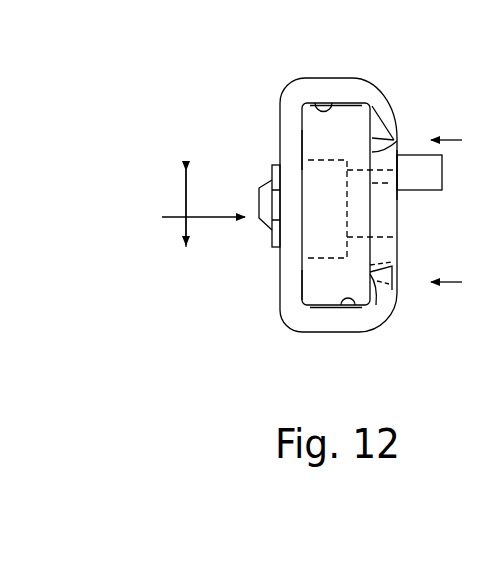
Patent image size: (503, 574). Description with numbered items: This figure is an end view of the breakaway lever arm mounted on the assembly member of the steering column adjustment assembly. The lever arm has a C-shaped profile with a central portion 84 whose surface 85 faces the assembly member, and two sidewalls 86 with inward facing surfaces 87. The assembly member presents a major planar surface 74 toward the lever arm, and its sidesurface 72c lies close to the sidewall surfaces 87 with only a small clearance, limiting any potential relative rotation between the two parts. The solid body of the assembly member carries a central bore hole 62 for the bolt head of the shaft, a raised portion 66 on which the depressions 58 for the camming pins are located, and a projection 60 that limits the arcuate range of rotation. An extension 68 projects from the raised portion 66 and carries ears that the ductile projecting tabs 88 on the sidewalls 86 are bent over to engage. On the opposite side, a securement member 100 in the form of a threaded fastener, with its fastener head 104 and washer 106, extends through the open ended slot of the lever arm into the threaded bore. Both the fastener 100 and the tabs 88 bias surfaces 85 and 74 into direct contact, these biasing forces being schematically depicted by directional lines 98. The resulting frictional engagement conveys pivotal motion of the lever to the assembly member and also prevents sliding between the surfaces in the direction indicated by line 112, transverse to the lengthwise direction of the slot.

The depressions 58 is at (388, 187).
The projection 60 is at (423, 182).
The central bore hole 62 is at (321, 157).
The raised portion 66 is at (400, 262).
The extension 68 is at (398, 142).
The sidesurface 72c is at (332, 103).
The major planar surface 74 is at (299, 148).
The central portion 84 is at (279, 140).
The surface 85 is at (309, 284).
The sidewalls 86 is at (334, 86).
The inward facing surfaces 87 is at (300, 80).
The ductile projecting tabs 88 is at (398, 120).
The directional lines 98 is at (217, 218).
The securement member 100 is at (258, 200).
The fastener head 104 is at (262, 223).
The washer 106 is at (300, 284).
The line 112 is at (185, 198).